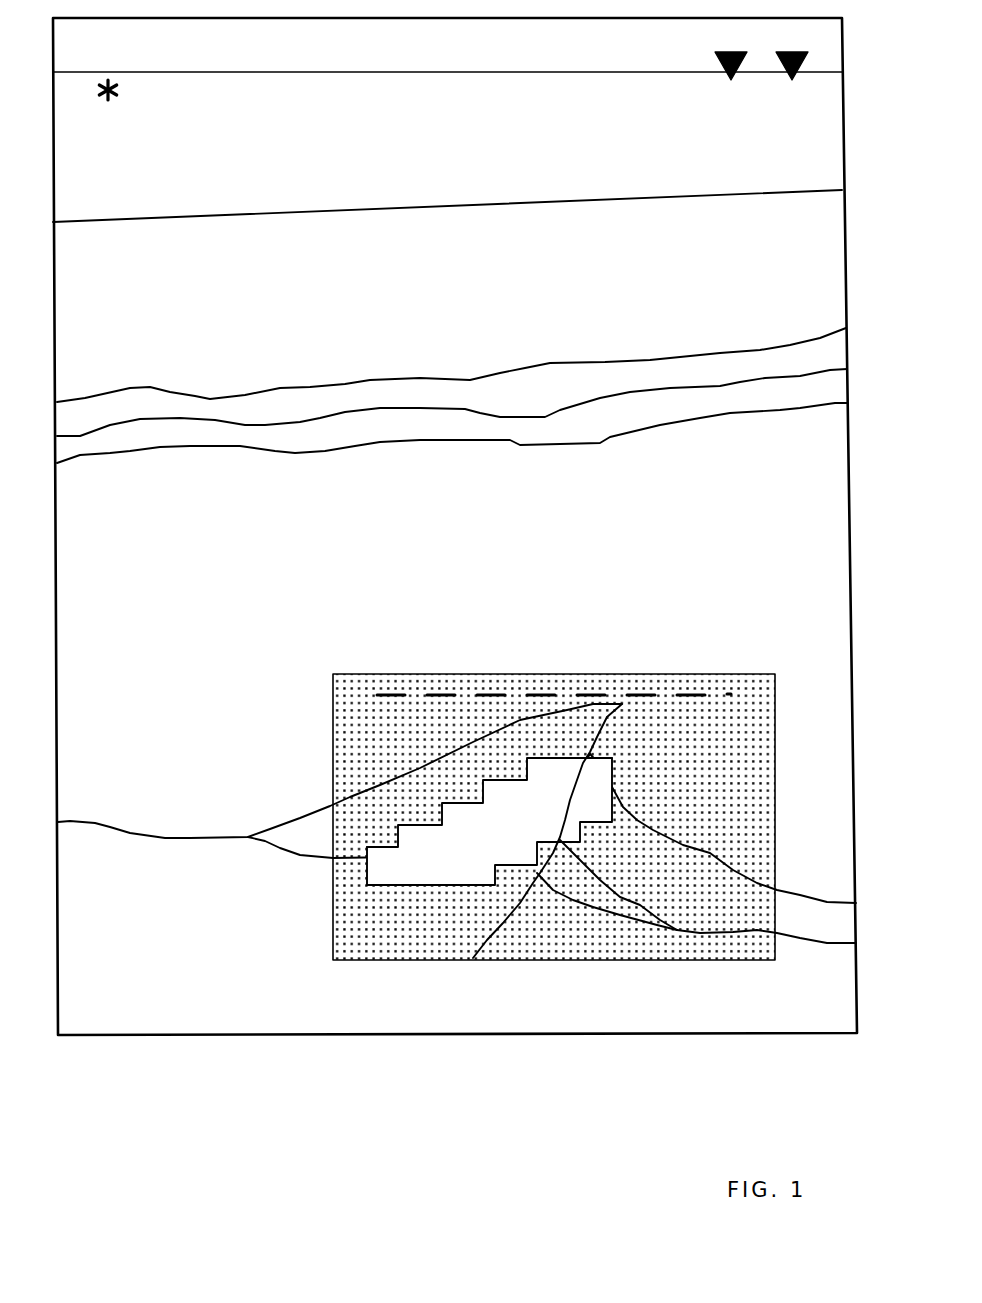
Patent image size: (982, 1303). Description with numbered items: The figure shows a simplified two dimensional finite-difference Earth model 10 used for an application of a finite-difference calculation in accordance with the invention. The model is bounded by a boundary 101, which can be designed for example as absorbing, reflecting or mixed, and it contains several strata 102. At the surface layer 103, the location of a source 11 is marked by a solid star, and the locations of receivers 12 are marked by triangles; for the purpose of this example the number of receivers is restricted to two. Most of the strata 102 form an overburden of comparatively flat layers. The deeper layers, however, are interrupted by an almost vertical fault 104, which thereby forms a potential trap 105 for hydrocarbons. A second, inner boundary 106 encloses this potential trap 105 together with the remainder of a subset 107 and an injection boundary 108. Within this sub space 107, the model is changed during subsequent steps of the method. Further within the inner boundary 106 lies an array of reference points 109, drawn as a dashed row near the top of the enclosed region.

The two dimensional finite-difference Earth model 10 is at (205, 1082).
The source 11 is at (120, 97).
The receivers 12 is at (741, 98).
The boundary 101 is at (377, 1037).
The strata 102 is at (173, 219).
The surface layer 103 is at (382, 73).
The fault 104 is at (487, 932).
The potential trap 105 is at (550, 803).
The second (inner) boundary 106 is at (382, 673).
The subset 107 is at (480, 808).
The injection boundary 108 is at (407, 886).
The array of reference points 109 is at (717, 696).